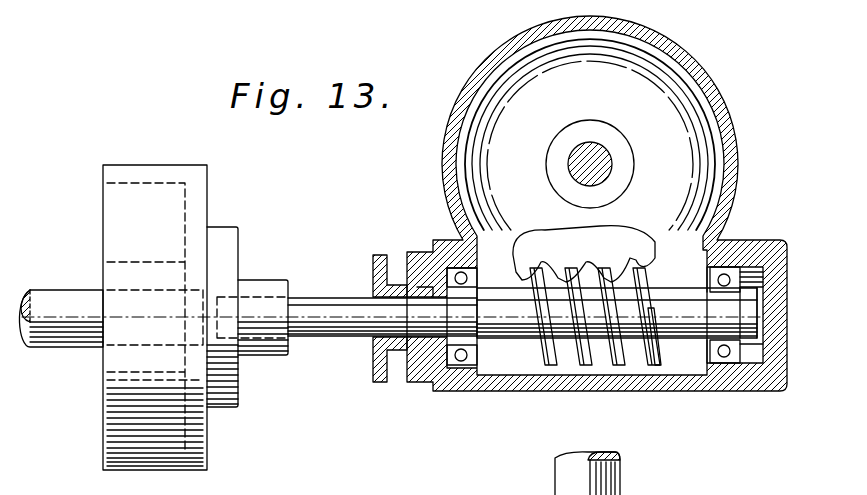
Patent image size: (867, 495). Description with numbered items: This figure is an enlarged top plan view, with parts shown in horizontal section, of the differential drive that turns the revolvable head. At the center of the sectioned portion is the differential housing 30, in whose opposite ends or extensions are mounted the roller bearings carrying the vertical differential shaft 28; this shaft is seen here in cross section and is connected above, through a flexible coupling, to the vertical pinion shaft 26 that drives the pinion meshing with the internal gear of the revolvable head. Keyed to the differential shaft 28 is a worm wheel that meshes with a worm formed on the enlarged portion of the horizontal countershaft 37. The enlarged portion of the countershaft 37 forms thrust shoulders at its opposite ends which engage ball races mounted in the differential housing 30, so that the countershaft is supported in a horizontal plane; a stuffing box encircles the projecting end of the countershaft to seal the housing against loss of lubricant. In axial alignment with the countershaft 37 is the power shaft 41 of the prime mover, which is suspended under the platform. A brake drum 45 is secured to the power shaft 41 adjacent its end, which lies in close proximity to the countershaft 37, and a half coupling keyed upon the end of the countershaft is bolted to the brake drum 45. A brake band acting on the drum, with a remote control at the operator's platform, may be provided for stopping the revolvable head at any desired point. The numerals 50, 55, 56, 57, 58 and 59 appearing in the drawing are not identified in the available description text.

The vertical pinion shaft 26 is at (620, 475).
The vertical differential shaft 28 is at (612, 153).
The differential housing 30 is at (738, 145).
The countershaft 37 is at (332, 337).
The power shaft 41 is at (64, 341).
The brake drum 45 is at (208, 438).
The bearing cap 50 is at (427, 387).
The worm threads 55 is at (640, 388).
The worm shaft 56 is at (505, 350).
The worm wheel 57 is at (638, 87).
The ball bearing 58 is at (713, 391).
The end nut 59 is at (770, 386).